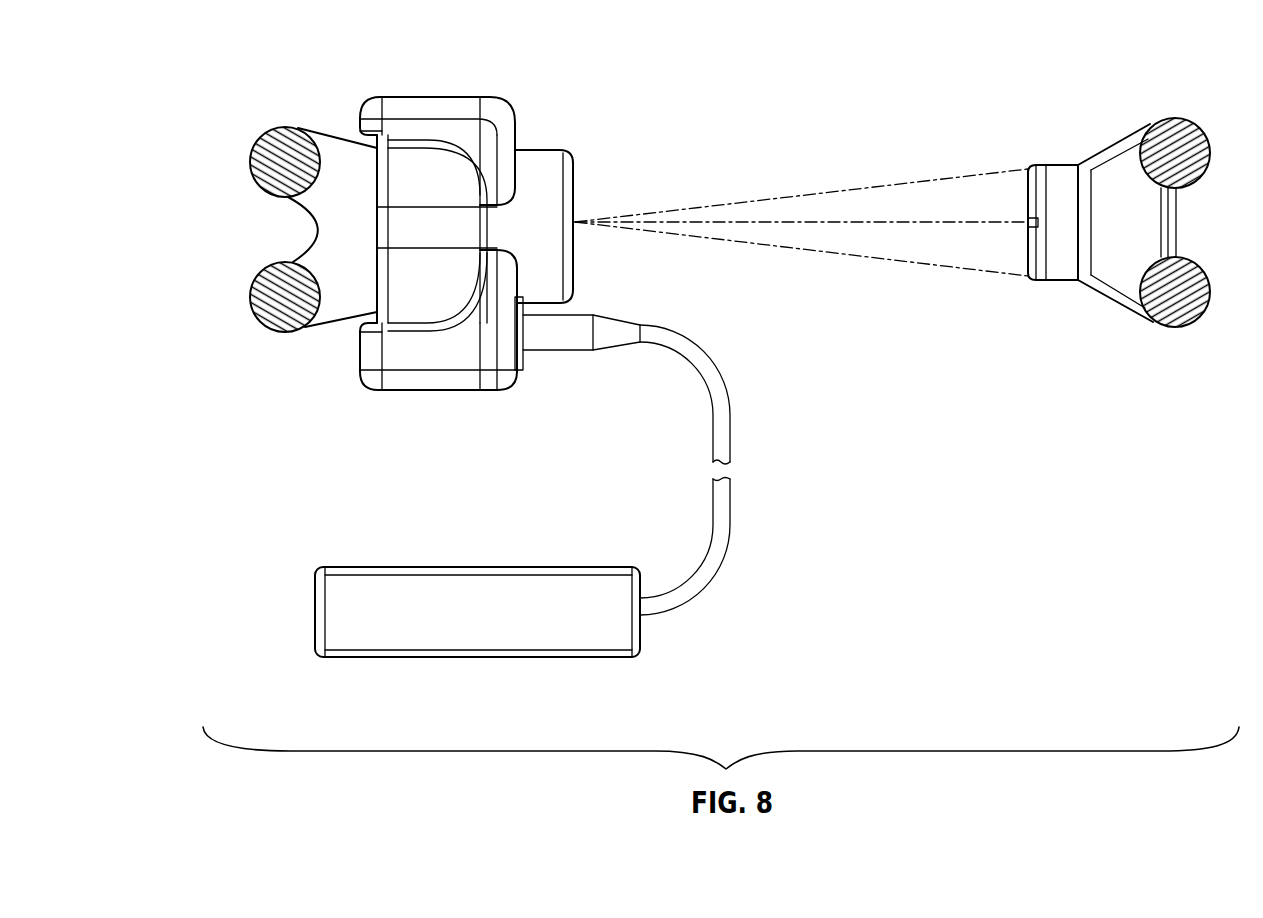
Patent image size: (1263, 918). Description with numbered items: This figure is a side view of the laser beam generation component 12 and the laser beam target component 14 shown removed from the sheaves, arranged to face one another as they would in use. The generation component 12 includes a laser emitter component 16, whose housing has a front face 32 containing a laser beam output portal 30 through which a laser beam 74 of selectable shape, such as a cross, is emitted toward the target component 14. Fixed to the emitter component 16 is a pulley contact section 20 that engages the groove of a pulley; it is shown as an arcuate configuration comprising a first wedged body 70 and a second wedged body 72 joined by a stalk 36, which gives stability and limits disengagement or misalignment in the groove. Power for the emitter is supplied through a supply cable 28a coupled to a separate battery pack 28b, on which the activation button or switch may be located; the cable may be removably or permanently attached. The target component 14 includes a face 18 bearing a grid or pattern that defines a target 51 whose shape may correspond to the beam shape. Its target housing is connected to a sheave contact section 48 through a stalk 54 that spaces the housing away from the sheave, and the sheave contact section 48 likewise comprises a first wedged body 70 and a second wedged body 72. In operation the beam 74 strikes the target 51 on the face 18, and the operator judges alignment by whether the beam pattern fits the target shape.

The laser beam generation component 12 is at (534, 108).
The laser beam target component 14 is at (1090, 194).
The laser emitter component 16 is at (440, 392).
The face 18 is at (1031, 262).
The pulley contact section 20 is at (707, 227).
The supply cable 28a is at (730, 443).
The battery pack 28b is at (438, 582).
The laser beam output portal 30 is at (574, 223).
The front face 32 is at (574, 177).
The stalk 36 is at (318, 245).
The sheave contact section 48 is at (1087, 322).
The target 51 is at (1031, 227).
The stalk 54 is at (1143, 222).
The first wedged body 70 is at (252, 166).
The second wedged body 72 is at (281, 333).
The laser beam 74 is at (760, 200).